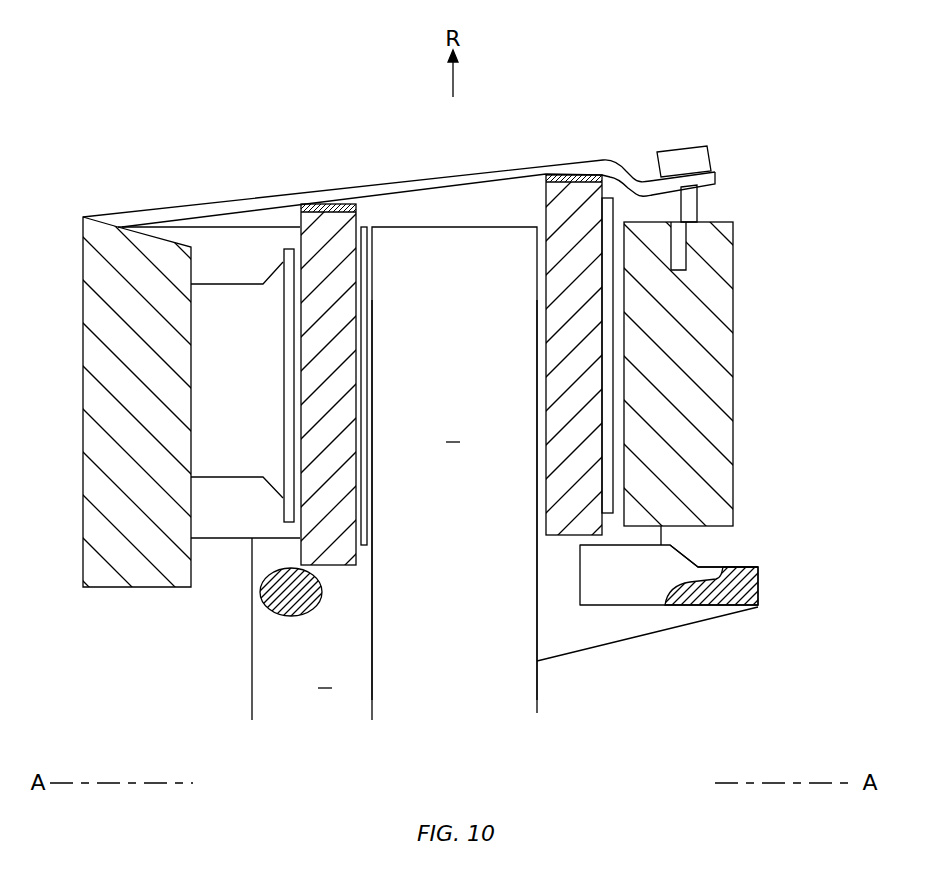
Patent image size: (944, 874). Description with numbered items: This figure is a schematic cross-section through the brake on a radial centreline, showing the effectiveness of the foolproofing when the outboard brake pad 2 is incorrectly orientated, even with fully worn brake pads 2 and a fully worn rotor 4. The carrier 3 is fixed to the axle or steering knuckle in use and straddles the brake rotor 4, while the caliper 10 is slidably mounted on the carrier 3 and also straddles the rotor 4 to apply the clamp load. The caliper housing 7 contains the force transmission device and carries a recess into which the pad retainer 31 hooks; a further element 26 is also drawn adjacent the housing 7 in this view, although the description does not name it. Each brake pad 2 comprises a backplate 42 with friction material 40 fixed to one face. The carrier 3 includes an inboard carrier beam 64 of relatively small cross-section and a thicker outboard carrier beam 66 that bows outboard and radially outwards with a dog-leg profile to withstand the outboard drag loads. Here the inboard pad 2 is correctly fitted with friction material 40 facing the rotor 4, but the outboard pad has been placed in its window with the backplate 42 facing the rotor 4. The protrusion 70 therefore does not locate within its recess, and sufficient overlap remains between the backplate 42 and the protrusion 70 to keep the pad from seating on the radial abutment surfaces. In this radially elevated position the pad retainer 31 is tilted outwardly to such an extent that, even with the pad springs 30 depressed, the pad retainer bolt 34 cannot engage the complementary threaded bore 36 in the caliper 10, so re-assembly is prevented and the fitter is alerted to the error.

The brake pad 2 is at (371, 479).
The carrier 3 is at (647, 600).
The brake rotor 4 is at (454, 473).
The housing 7 is at (118, 588).
The caliper 10 is at (726, 339).
The plate 26 is at (284, 514).
The pad spring 30 is at (326, 203).
The pad retainer 31 is at (457, 180).
The pad retainer bolt 34 is at (704, 159).
The threaded bore 36 is at (681, 253).
The friction material 40 is at (608, 196).
The backplate 42 is at (347, 220).
The inboard carrier beam 64 is at (288, 610).
The outboard carrier beam 66 is at (725, 598).
The protrusion 70 is at (688, 556).